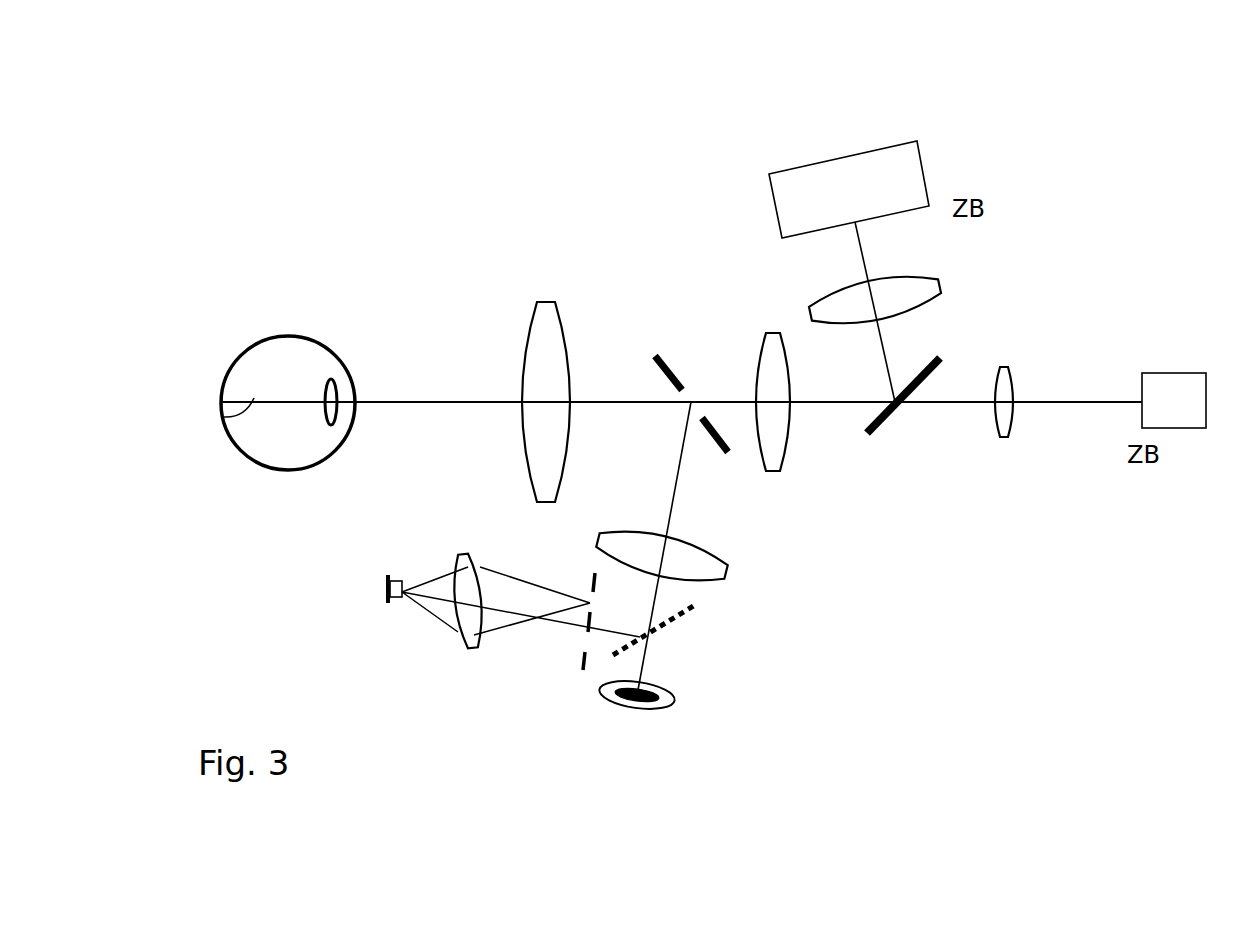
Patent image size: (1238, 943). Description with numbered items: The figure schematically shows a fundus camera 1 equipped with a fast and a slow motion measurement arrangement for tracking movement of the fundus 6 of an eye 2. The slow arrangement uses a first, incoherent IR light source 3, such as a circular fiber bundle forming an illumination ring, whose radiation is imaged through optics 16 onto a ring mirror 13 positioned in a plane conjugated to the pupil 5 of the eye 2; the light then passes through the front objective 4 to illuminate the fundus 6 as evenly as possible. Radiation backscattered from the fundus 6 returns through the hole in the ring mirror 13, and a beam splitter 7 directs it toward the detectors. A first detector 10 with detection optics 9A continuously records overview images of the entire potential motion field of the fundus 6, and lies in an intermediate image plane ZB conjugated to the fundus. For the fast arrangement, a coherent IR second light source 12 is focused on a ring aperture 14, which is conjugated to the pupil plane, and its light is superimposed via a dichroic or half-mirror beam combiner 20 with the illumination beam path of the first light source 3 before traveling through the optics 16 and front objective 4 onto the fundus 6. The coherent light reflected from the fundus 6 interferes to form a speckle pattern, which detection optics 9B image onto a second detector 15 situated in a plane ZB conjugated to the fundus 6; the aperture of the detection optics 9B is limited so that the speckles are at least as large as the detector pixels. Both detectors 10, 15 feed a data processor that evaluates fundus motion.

The fundus camera 1 is at (370, 85).
The eye 2 is at (248, 456).
The first light source 3 is at (667, 707).
The front objective 4 is at (526, 322).
The pupil 5 is at (338, 388).
The fundus 6 is at (254, 398).
The beam splitter 7 is at (870, 437).
The detection optics 9A is at (1013, 420).
The detection optics 9B is at (937, 307).
The first detector 10 is at (1165, 373).
The second light source 12 is at (388, 577).
The ring mirror 13 is at (669, 358).
The ring aperture 14 is at (582, 663).
The second detector 15 is at (812, 162).
The optics 16 is at (726, 553).
The beam combiner 20 is at (668, 623).